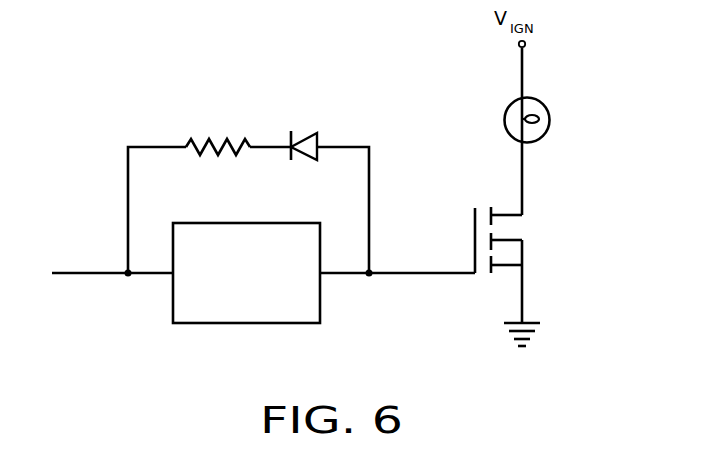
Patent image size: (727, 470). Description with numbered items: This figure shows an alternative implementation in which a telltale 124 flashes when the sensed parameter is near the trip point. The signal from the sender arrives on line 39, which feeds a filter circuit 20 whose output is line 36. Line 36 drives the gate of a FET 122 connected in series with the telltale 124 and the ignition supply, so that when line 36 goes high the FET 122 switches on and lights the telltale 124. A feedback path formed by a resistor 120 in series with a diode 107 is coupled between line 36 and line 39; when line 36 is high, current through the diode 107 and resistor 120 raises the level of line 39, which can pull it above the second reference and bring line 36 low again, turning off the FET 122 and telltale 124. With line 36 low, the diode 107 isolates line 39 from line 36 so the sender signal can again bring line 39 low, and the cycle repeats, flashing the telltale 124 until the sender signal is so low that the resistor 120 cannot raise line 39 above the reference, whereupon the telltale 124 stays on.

The filter circuit 20 is at (220, 222).
The line 36 is at (447, 270).
The line 39 is at (102, 272).
The diode 107 is at (315, 142).
The resistor 120 is at (230, 138).
The FET 122 is at (475, 238).
The telltale 124 is at (550, 113).